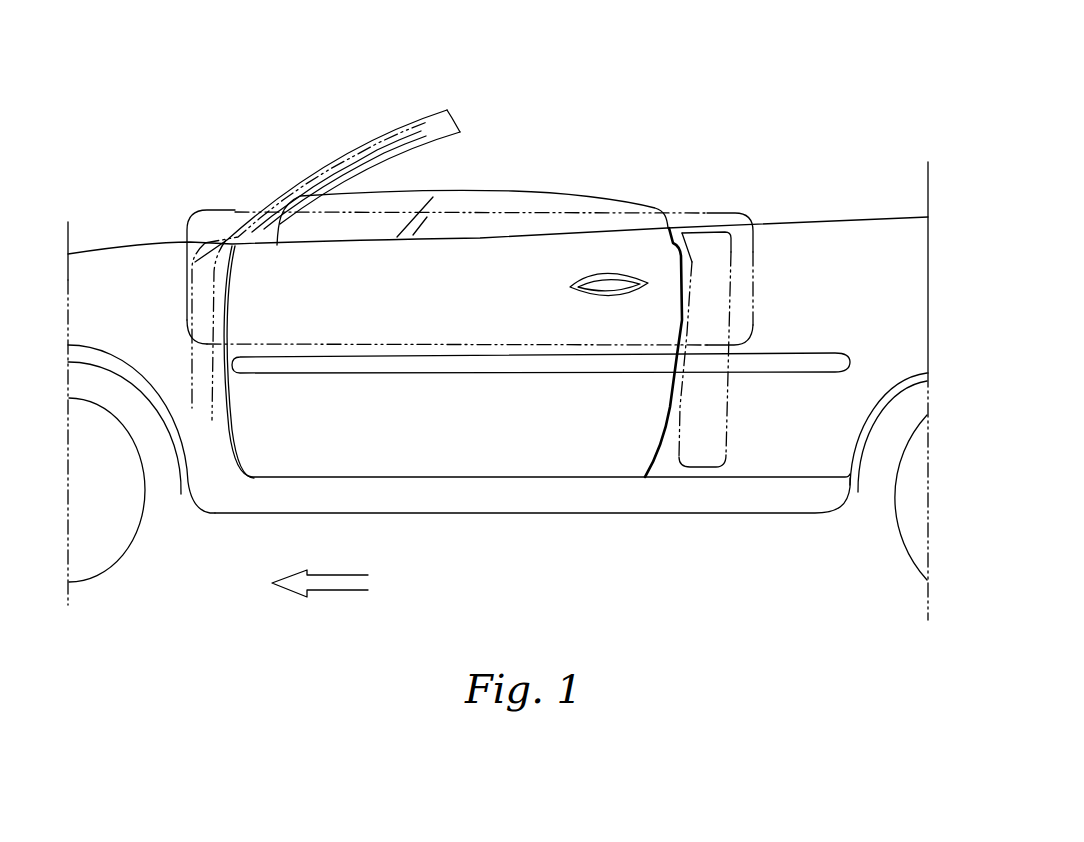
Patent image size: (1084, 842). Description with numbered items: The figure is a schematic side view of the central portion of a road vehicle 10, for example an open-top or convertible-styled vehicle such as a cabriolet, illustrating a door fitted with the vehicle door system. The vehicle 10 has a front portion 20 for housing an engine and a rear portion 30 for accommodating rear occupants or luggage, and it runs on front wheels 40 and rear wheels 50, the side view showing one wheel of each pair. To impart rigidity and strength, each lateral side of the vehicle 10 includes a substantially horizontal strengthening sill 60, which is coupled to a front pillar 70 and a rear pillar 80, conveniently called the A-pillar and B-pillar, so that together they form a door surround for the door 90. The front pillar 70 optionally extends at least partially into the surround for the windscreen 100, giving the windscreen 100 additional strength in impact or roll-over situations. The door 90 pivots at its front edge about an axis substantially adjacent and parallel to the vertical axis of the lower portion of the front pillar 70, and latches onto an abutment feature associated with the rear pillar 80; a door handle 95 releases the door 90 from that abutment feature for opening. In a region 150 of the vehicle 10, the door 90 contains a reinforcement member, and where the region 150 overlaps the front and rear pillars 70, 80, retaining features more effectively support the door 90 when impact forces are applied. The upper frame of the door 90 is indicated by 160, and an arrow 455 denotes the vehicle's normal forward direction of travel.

The road vehicle 10 is at (210, 70).
The front portion 20 is at (125, 273).
The rear portion 30 is at (865, 273).
The front wheel 40 is at (147, 520).
The rear wheel 50 is at (907, 540).
The strengthening sill 60 is at (592, 495).
The front pillar 70 is at (305, 177).
The rear pillar 80 is at (707, 408).
The door 90 is at (394, 440).
The door handle 95 is at (600, 285).
The windscreen 100 is at (427, 128).
The region 150 is at (718, 212).
The window frame 160 is at (483, 200).
The arrow 455 is at (337, 583).